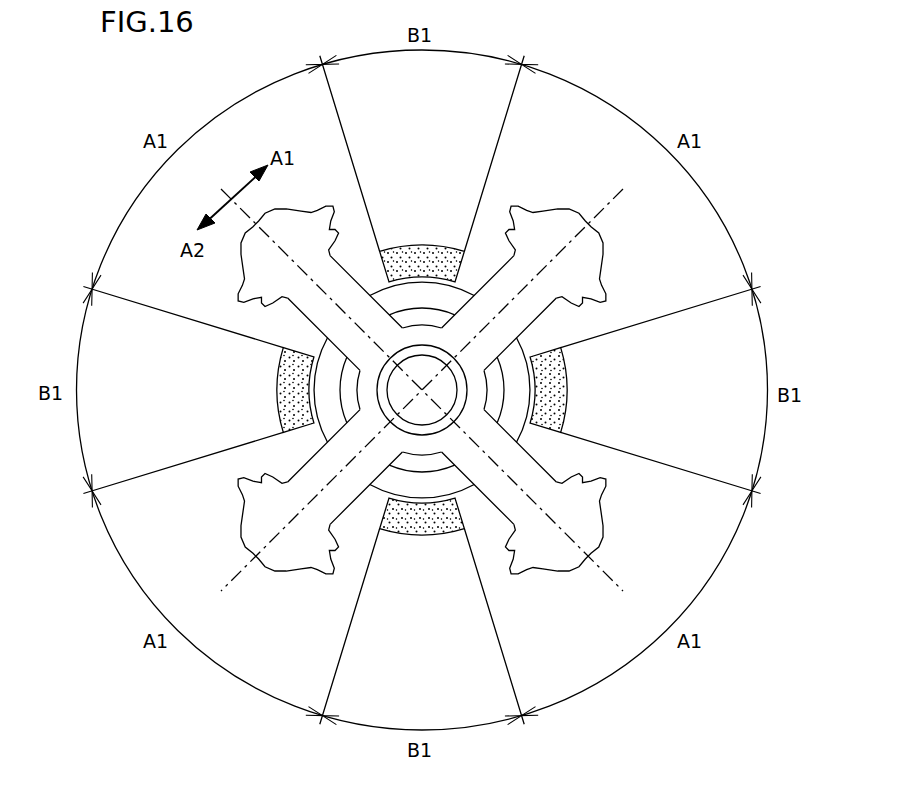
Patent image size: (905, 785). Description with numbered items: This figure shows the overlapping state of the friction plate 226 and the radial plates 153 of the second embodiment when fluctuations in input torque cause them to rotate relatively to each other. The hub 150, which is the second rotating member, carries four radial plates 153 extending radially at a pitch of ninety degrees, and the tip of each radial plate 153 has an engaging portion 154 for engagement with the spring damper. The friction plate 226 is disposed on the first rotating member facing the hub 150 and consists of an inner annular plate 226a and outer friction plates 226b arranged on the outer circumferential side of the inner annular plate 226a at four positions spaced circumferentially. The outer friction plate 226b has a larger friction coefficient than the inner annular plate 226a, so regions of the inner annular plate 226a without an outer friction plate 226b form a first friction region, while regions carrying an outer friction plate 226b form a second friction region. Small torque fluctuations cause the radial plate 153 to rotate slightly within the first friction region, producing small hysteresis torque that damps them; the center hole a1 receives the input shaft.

The hub 150 is at (651, 266).
The radial plate 153 is at (424, 390).
The engaging portion 154 is at (265, 250).
The friction plate 226 is at (425, 395).
The inner annular plate 226a is at (460, 556).
The outer friction plate 226b is at (425, 391).
The center shaft hole a1 is at (498, 390).